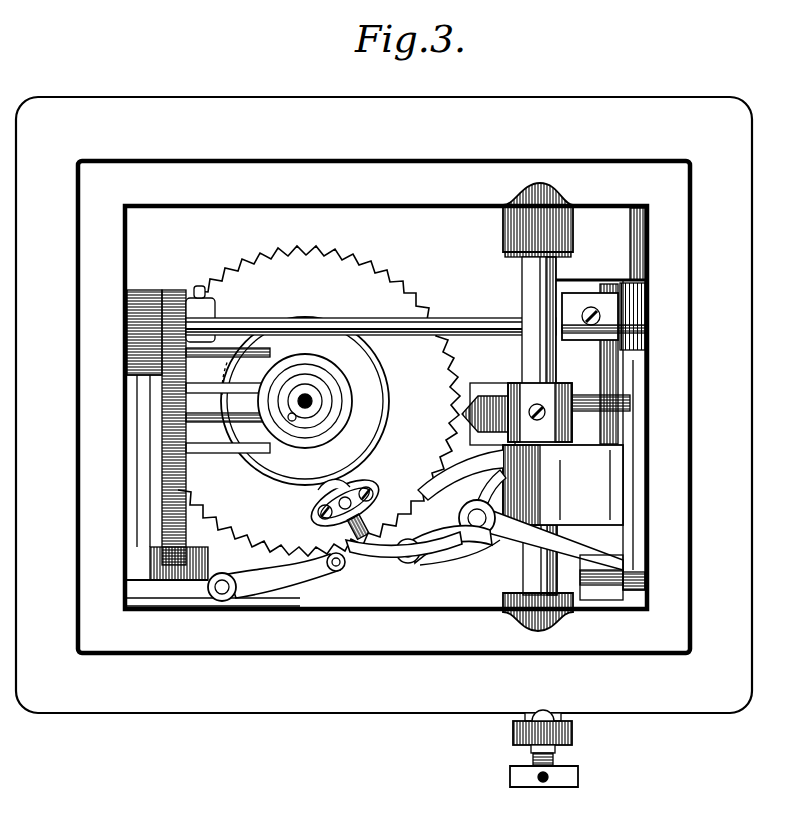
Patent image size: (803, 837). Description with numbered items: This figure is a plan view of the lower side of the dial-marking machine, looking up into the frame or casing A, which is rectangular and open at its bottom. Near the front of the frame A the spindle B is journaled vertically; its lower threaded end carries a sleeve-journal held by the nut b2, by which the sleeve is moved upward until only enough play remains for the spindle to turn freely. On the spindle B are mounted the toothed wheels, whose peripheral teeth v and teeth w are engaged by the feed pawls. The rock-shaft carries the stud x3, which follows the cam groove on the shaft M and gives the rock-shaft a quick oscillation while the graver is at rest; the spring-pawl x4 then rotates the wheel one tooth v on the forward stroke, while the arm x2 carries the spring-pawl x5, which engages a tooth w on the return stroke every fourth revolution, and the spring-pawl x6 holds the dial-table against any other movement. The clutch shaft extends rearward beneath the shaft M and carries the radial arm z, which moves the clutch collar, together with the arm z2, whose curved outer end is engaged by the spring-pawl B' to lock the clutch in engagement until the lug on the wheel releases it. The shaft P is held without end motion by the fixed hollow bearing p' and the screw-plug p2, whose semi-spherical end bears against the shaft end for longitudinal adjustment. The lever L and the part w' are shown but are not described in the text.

The frame or casing A is at (384, 405).
The spindle B is at (305, 401).
The spring-pawl B' is at (292, 401).
The nut b2 is at (322, 402).
The radial arm z is at (371, 321).
The arm z2 is at (216, 425).
The peripheral teeth v is at (319, 401).
The teeth w is at (290, 387).
The pawl w' is at (349, 512).
The arm x2 is at (448, 545).
The stud x3 is at (492, 486).
The spring-pawl x4 is at (520, 454).
The spring-pawl x5 is at (404, 544).
The spring-pawl x6 is at (276, 577).
The lever L is at (541, 550).
The shaft M is at (602, 362).
The shaft P is at (538, 407).
The fixed hollow bearing p' is at (555, 727).
The screw-plug p2 is at (556, 758).